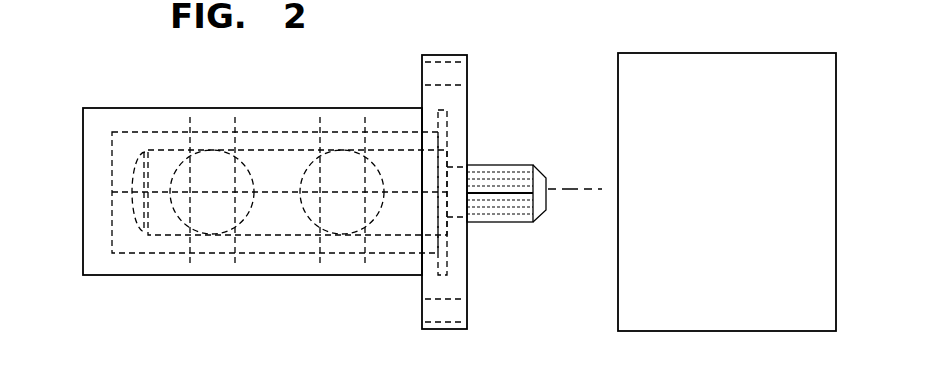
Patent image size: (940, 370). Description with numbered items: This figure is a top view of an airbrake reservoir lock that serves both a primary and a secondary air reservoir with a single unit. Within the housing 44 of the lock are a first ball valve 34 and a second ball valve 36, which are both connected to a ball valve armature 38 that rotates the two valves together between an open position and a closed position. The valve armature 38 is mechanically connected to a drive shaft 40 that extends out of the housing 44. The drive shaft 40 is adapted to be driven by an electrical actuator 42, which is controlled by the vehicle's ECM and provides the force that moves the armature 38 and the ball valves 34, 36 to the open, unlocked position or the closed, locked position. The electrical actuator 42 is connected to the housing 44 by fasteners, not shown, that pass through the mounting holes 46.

The housing 44 is at (118, 108).
The ball valve armature 38 is at (162, 228).
The first ball valve 34 is at (237, 245).
The second ball valve 36 is at (367, 245).
The mounting holes 46 is at (452, 73).
The drive shaft 40 is at (493, 165).
The electrical actuator 42 is at (836, 158).